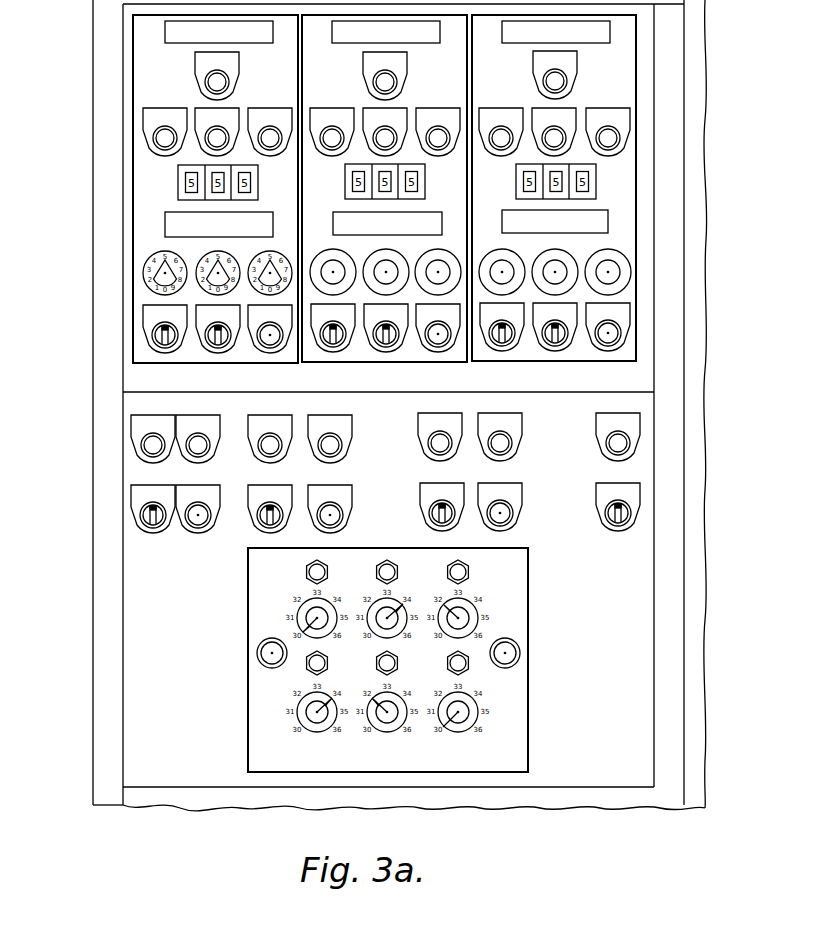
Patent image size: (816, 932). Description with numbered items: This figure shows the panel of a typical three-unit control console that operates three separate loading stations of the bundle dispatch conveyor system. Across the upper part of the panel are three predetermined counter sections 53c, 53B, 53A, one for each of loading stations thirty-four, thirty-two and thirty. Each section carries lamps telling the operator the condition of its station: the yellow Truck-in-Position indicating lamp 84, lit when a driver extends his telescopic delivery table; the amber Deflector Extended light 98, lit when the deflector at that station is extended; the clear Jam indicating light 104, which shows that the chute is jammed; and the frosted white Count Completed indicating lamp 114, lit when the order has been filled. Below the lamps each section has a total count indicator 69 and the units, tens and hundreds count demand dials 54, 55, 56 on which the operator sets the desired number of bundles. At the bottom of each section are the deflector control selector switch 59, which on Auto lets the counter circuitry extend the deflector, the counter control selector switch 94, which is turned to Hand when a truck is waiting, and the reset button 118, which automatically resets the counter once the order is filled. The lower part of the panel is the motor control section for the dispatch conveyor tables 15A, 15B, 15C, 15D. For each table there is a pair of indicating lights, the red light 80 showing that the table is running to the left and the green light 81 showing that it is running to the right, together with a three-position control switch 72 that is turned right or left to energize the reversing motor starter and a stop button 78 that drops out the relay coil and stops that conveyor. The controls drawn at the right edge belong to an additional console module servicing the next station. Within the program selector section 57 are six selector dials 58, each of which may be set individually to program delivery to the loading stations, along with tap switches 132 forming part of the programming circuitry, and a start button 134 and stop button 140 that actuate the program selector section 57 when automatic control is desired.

The predetermined counter section 53c is at (294, 202).
The predetermined counter section 53B is at (462, 194).
The predetermined counter section 53A is at (627, 223).
The Truck-in-Position indicating lamp 84 is at (144, 137).
The Jam indicating light 104 is at (233, 109).
The Count Completed indicating lamp 114 is at (270, 151).
The Deflector Extended light 98 is at (581, 75).
The total count indicator 69 is at (178, 185).
The count demand dial 56 is at (144, 265).
The count demand dial 55 is at (251, 245).
The count demand dial 54 is at (301, 248).
The deflector control selector switch 59 is at (150, 338).
The counter control selector switch 94 is at (210, 350).
The reset button 118 is at (270, 350).
The indicating light 80 is at (157, 417).
The indicating light 81 is at (208, 417).
The conveyor table 15A is at (618, 445).
The conveyor table 15B is at (470, 444).
The conveyor table 15C is at (302, 467).
The conveyor table 15D is at (179, 471).
The control switch 72 is at (146, 528).
The stop button 78 is at (200, 530).
The selector dial 58 is at (497, 595).
The program selector section 57 is at (244, 731).
The tap switch 132 is at (274, 592).
The start button 134 is at (257, 655).
The stop button 140 is at (518, 652).